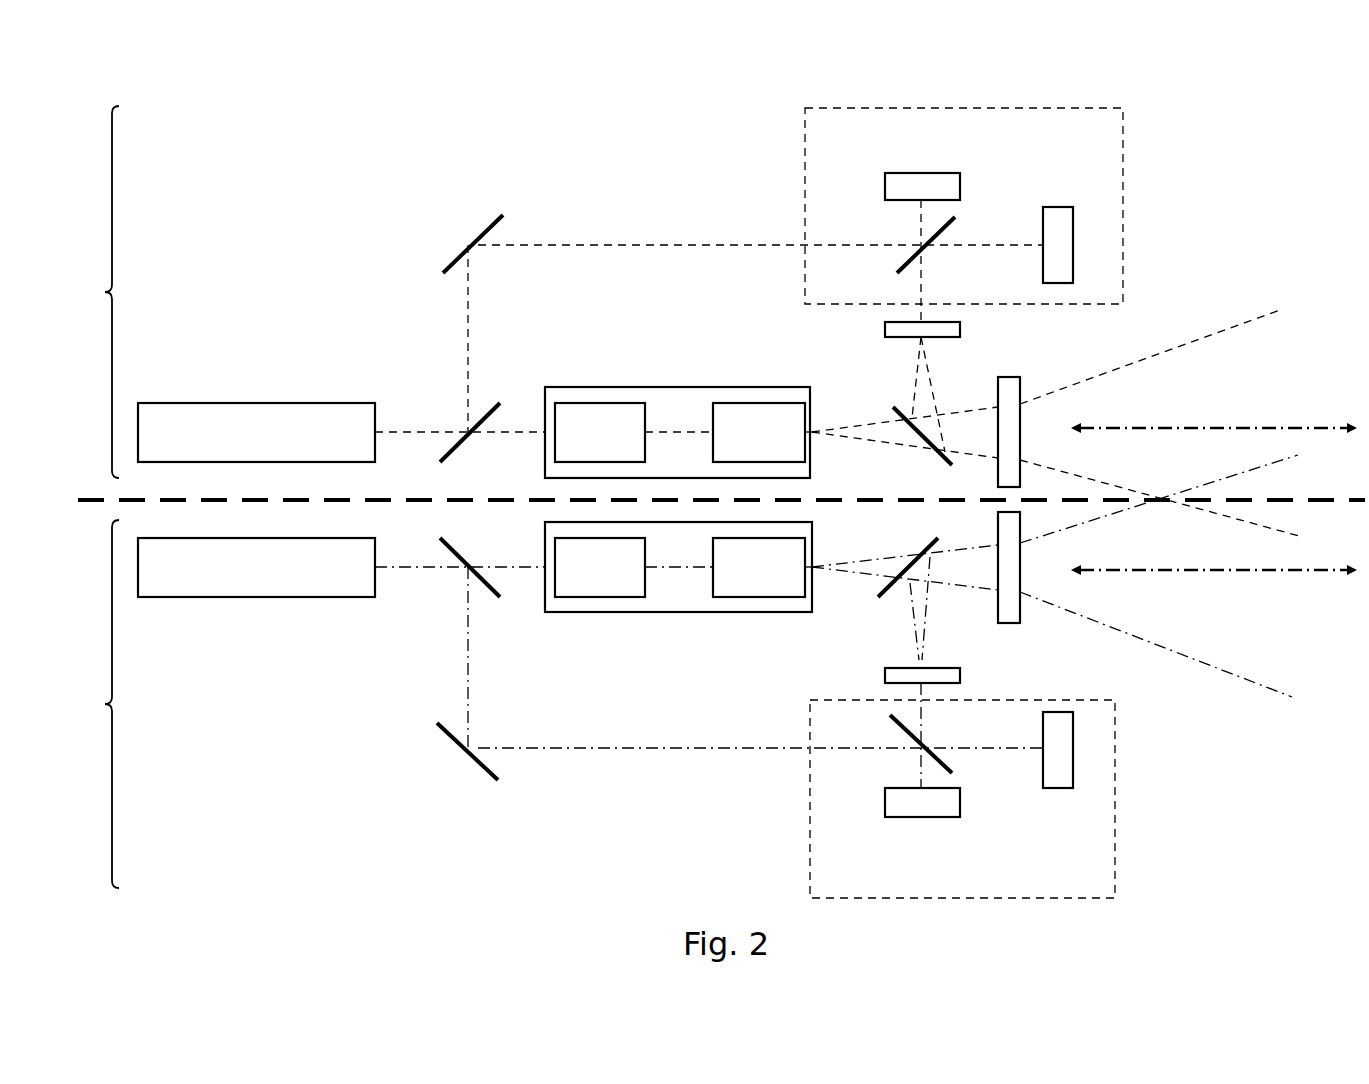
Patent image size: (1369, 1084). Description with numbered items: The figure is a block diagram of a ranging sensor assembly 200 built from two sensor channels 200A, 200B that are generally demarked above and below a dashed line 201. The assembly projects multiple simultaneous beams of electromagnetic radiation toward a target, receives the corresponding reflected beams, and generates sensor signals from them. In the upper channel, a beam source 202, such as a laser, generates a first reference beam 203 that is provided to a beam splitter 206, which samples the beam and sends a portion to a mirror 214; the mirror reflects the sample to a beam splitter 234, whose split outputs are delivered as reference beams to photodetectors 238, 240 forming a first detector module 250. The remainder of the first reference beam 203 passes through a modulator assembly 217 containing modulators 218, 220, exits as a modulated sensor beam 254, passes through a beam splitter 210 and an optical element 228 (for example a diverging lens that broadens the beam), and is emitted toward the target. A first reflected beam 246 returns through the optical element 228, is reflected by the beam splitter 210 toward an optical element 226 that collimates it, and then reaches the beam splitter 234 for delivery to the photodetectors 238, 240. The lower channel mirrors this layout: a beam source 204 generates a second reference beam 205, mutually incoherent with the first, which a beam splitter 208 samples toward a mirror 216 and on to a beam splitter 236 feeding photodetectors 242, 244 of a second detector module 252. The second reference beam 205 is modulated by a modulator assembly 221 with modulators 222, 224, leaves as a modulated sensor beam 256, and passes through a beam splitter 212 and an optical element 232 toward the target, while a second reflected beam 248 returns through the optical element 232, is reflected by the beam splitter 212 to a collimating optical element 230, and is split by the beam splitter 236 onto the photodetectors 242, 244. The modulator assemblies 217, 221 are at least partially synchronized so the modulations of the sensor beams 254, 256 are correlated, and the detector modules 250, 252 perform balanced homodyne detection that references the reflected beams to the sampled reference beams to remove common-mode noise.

The ranging sensor assembly 200 is at (158, 112).
The first sensor channel 200A is at (78, 292).
The second sensor channel 200B is at (78, 704).
The dashed line 201 is at (80, 498).
The beam source 202 is at (256, 432).
The beam source 204 is at (256, 567).
The first reference beam 203 is at (400, 422).
The second reference beam 205 is at (395, 587).
The beam splitter 206 is at (490, 405).
The beam splitter 208 is at (485, 590).
The beam splitter 210 is at (894, 410).
The beam splitter 212 is at (880, 588).
The mirror 214 is at (483, 232).
The mirror 216 is at (477, 765).
The modulator assembly 217 is at (624, 387).
The modulator 218 is at (600, 432).
The modulator 220 is at (759, 432).
The modulator assembly 221 is at (608, 612).
The modulator 222 is at (600, 567).
The modulator 224 is at (759, 567).
The optical element 226 is at (885, 328).
The optical element 228 is at (1006, 377).
The optical element 230 is at (885, 676).
The optical element 232 is at (1010, 623).
The beam splitter 234 is at (896, 270).
The beam splitter 236 is at (950, 768).
The photodetector 238 is at (925, 173).
The photodetector 240 is at (1060, 207).
The photodetector 242 is at (928, 817).
The photodetector 244 is at (1054, 788).
The first reflected beam 246 is at (932, 398).
The second reflected beam 248 is at (925, 642).
The first detector module 250 is at (805, 170).
The second detector module 252 is at (1115, 780).
The modulated sensor beam 254 is at (898, 448).
The modulated sensor beam 256 is at (902, 558).